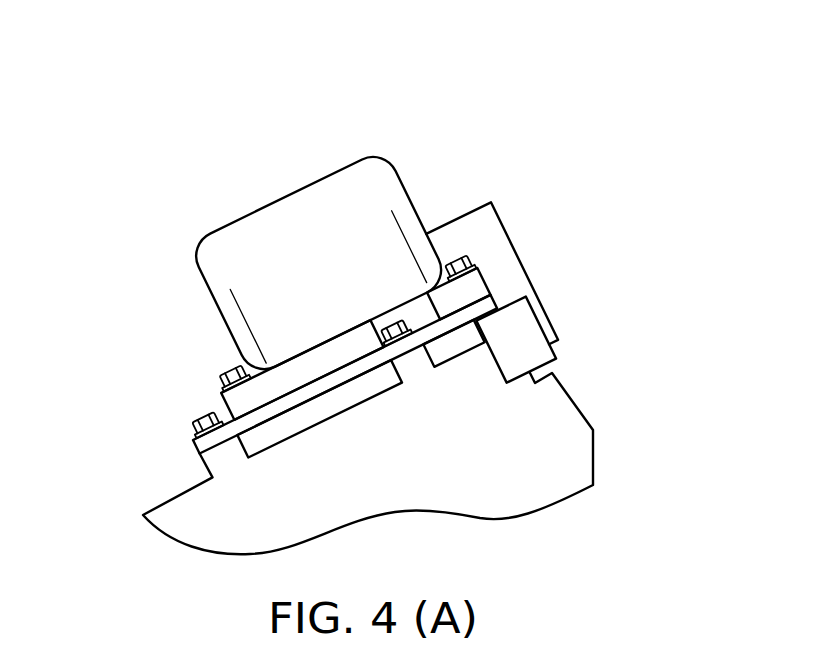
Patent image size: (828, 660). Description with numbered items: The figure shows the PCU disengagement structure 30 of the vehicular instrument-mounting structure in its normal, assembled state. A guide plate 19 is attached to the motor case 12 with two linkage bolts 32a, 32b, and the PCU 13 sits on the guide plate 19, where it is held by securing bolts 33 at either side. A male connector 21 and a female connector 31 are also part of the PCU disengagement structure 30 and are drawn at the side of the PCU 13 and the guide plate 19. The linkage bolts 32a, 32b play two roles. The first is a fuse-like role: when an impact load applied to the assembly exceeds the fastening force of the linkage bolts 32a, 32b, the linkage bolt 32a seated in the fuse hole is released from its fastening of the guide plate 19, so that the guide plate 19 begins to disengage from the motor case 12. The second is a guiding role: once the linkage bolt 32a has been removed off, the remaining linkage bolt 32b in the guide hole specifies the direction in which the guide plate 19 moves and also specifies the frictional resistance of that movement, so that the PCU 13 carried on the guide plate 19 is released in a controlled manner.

The PCU disengagement structure 30 is at (233, 108).
The PCU 13 is at (317, 182).
The linkage bolt 32b is at (393, 318).
The securing bolt 33 is at (230, 368).
The male connector 21 is at (519, 255).
The female connector 31 is at (555, 353).
The motor case 12 is at (595, 458).
The linkage bolt 32a is at (205, 415).
The guide plate 19 is at (198, 448).